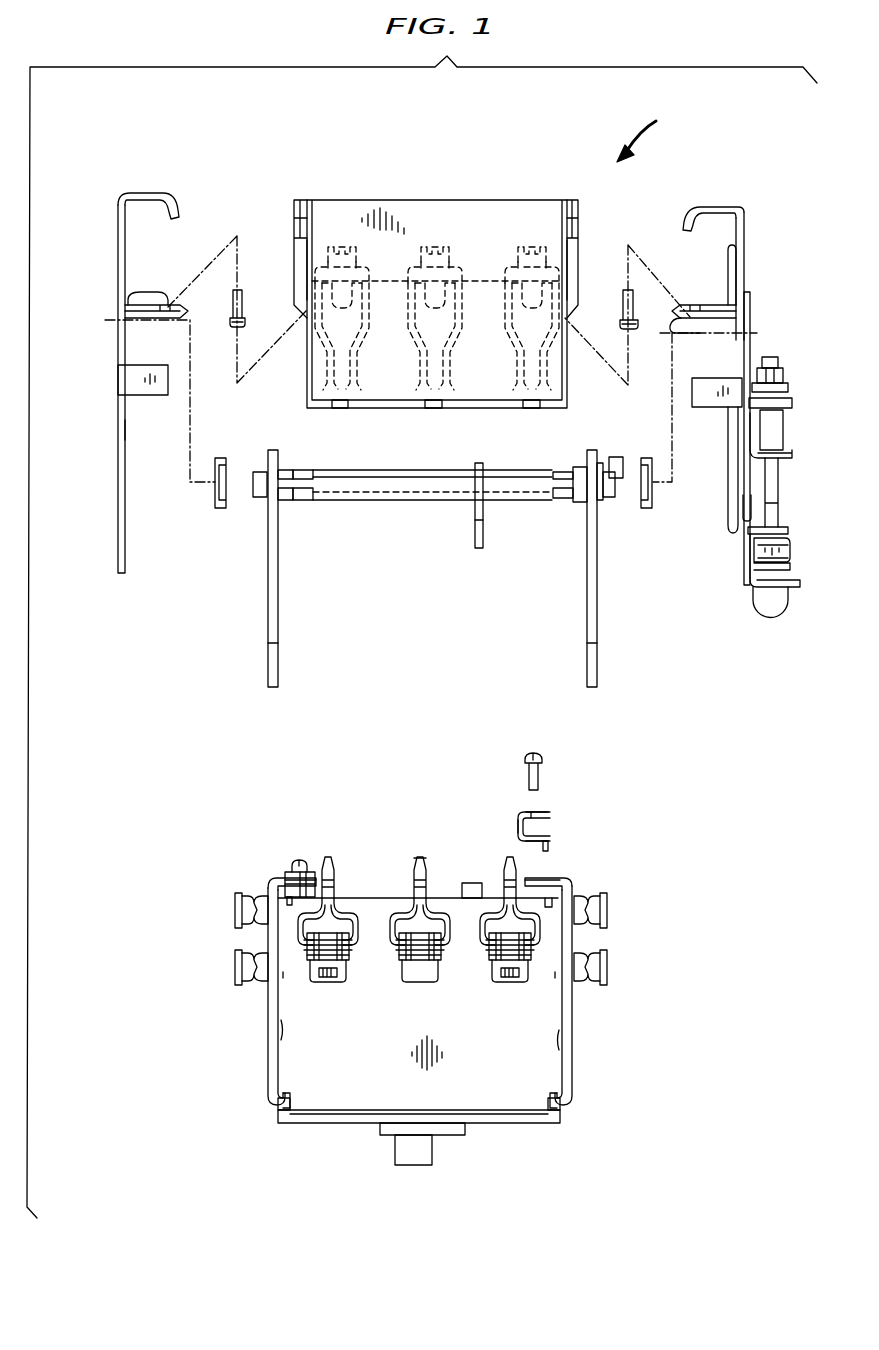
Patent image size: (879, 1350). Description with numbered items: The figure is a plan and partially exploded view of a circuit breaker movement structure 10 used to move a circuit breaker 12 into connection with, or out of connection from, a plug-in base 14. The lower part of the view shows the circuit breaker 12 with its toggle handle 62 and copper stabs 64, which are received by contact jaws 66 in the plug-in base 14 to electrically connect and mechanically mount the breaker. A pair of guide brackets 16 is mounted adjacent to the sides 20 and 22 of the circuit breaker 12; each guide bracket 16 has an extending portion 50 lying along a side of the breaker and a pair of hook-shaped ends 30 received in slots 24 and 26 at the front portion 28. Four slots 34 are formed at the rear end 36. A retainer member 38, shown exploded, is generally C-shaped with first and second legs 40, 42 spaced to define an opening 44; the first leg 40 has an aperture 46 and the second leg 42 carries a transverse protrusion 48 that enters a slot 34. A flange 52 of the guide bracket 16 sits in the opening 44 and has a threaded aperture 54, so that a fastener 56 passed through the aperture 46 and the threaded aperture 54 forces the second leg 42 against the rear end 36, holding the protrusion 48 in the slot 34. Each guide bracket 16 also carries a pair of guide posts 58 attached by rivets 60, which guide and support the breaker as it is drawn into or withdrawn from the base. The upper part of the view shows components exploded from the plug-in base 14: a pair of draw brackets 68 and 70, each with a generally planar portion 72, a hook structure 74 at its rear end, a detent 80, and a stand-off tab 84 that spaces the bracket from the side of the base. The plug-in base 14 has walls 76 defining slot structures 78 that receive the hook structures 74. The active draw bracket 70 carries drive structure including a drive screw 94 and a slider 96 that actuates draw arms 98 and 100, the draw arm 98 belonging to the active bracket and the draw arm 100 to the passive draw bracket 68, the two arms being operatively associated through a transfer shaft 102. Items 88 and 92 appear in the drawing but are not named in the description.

The circuit breaker movement structure 10 is at (645, 131).
The circuit breaker 12 is at (333, 1125).
The plug-in base 14 is at (435, 200).
The guide bracket 16 is at (572, 1060).
The side 20 is at (280, 1023).
The side 22 is at (560, 1040).
The slot 24 is at (293, 1100).
The slot 26 is at (560, 1108).
The front portion 28 is at (493, 1125).
The hook-shaped end 30 is at (551, 1125).
The slot 34 is at (572, 940).
The rear end 36 is at (357, 898).
The retainer member 38 is at (521, 815).
The first leg 40 is at (540, 812).
The second leg 42 is at (545, 840).
The opening 44 is at (540, 825).
The aperture 46 is at (530, 812).
The protrusion 48 is at (548, 848).
The extending portion 50 is at (572, 1013).
The flange 52 is at (560, 878).
The threaded aperture 54 is at (537, 877).
The fastener 56 is at (548, 757).
The guide post 58 is at (610, 982).
The rivet 60 is at (555, 975).
The toggle handle 62 is at (418, 1160).
The copper stab 64 is at (423, 858).
The contact jaw 66 is at (447, 375).
The draw bracket 68 is at (117, 468).
The draw bracket 70 is at (748, 258).
The planar portion 72 is at (730, 305).
The hook structure 74 is at (722, 207).
The wall 76 is at (562, 238).
The slot structure 78 is at (567, 200).
The detent 80 is at (668, 327).
The stand-off tab 84 is at (708, 397).
The bottom flange 88 is at (688, 320).
The screw 92 is at (622, 300).
The drive screw 94 is at (790, 487).
The slider 96 is at (750, 345).
The draw arm 98 is at (597, 585).
The draw arm 100 is at (280, 590).
The transfer shaft 102 is at (437, 495).